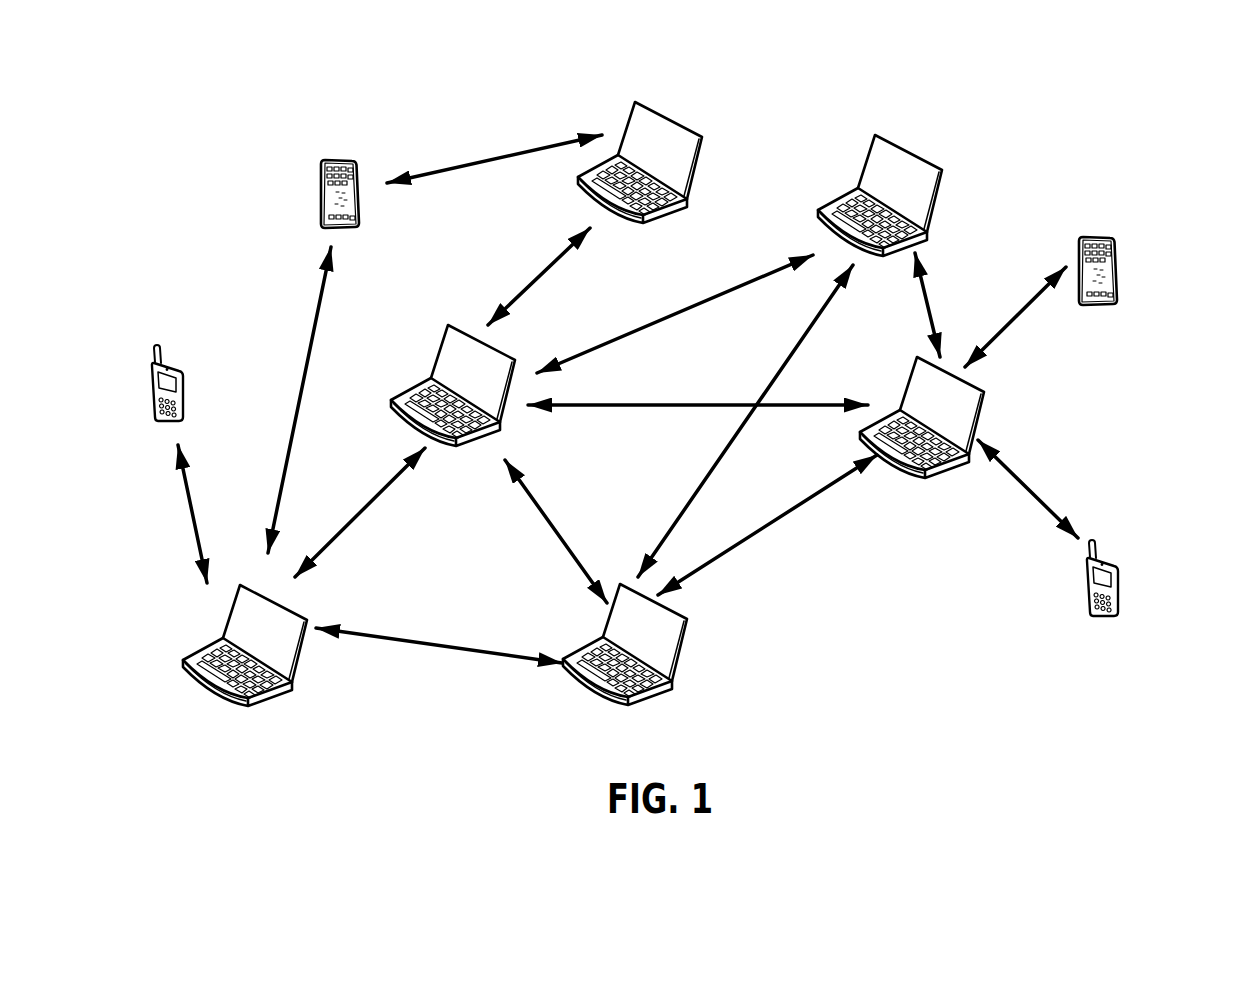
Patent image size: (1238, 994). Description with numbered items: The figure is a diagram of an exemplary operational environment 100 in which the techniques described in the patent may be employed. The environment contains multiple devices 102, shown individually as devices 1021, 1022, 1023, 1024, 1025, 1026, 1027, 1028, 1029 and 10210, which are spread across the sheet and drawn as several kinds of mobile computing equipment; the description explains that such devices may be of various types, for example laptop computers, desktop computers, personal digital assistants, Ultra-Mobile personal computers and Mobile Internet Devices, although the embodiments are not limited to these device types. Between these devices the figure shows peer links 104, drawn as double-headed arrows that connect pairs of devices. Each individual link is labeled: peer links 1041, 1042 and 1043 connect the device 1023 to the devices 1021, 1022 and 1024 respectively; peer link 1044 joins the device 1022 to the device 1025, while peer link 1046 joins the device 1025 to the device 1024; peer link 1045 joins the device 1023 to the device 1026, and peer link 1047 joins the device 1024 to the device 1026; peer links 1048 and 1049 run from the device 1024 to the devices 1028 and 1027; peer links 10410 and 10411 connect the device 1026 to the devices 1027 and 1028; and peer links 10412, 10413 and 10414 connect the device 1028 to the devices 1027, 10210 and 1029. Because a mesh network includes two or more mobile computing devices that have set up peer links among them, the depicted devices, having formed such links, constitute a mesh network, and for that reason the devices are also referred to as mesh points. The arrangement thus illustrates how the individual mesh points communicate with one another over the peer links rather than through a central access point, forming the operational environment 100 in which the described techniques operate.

The operational environment 100 is at (1153, 63).
The devices 102 is at (675, 396).
The device 1021 is at (185, 372).
The device 1022 is at (366, 170).
The device 1023 is at (307, 619).
The device 1024 is at (516, 360).
The device 1025 is at (702, 137).
The device 1026 is at (688, 620).
The device 1027 is at (943, 170).
The device 1028 is at (985, 392).
The device 1029 is at (1118, 565).
The device 10210 is at (1115, 248).
The peer links 104 is at (607, 387).
The peer link 1041 is at (195, 527).
The peer link 1042 is at (290, 448).
The peer link 1043 is at (382, 490).
The peer link 1044 is at (508, 155).
The peer link 1045 is at (423, 642).
The peer link 1046 is at (528, 285).
The peer link 1047 is at (550, 527).
The peer link 1048 is at (642, 417).
The peer link 1049 is at (712, 296).
The peer link 10410 is at (775, 378).
The peer link 10411 is at (786, 514).
The peer link 10412 is at (926, 303).
The peer link 10413 is at (1020, 312).
The peer link 10414 is at (1030, 491).